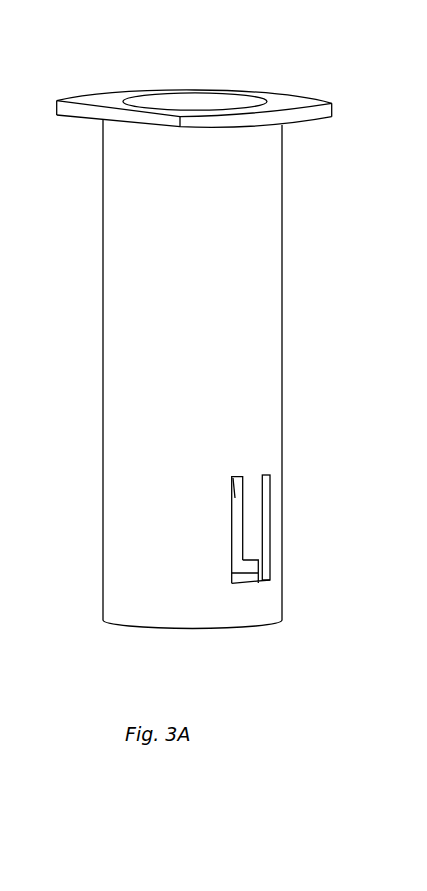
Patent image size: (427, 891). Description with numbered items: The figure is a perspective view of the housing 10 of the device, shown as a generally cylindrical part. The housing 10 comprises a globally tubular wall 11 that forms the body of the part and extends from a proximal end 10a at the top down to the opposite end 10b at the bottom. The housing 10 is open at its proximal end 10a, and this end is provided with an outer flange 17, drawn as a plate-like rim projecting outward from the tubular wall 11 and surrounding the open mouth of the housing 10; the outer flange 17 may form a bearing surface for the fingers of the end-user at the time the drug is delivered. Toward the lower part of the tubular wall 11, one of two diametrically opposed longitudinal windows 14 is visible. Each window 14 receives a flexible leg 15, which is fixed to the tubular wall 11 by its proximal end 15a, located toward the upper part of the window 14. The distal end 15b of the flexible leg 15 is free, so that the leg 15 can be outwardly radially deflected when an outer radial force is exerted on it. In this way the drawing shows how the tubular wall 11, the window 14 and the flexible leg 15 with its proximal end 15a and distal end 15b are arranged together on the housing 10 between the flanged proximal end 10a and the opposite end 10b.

The housing 10 is at (195, 361).
The proximal end 10a is at (220, 98).
The lower end 10b is at (115, 638).
The tubular wall 11 is at (283, 353).
The longitudinal window 14 is at (247, 567).
The flexible leg 15 is at (303, 535).
The proximal end 15a is at (250, 480).
The distal end 15b is at (250, 550).
The outer flange 17 is at (311, 126).